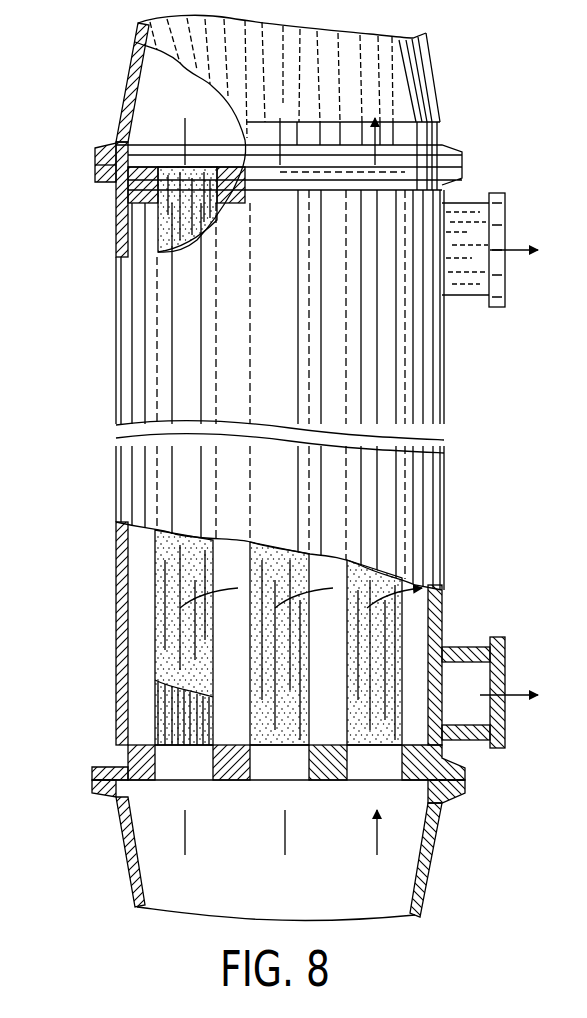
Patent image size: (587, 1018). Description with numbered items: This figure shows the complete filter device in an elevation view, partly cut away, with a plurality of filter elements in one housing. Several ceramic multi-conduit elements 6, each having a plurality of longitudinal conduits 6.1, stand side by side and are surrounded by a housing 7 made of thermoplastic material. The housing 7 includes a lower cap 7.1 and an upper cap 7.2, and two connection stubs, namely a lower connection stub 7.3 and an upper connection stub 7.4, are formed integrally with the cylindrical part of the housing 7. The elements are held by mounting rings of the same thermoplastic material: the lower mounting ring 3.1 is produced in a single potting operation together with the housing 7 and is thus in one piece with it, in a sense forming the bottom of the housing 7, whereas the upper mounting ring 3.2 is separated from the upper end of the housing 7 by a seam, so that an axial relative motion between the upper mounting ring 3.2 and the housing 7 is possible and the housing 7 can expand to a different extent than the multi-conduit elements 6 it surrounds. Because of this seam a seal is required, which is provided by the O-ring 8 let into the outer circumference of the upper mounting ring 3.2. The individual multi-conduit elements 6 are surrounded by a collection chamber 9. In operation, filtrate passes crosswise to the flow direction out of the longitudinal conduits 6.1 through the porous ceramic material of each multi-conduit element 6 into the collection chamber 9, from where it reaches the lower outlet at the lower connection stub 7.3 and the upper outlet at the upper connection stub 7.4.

The upper cap 7.2 is at (440, 107).
The O-ring 8 is at (116, 166).
The upper mounting ring 3.2 is at (162, 188).
The housing 7 is at (116, 247).
The upper connection stub 7.4 is at (462, 265).
The collection chamber 9 is at (138, 580).
The multi-conduit element 6 is at (172, 657).
The lower mounting ring 3.1 is at (147, 745).
The longitudinal conduits 6.1 is at (168, 782).
The lower connection stub 7.3 is at (470, 736).
The lower cap 7.1 is at (116, 820).